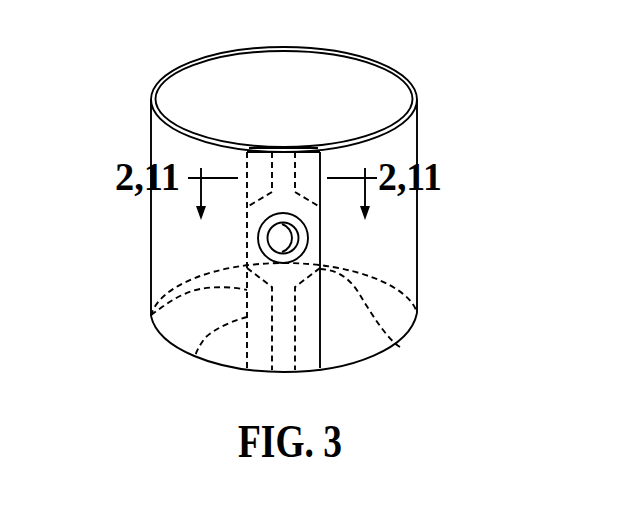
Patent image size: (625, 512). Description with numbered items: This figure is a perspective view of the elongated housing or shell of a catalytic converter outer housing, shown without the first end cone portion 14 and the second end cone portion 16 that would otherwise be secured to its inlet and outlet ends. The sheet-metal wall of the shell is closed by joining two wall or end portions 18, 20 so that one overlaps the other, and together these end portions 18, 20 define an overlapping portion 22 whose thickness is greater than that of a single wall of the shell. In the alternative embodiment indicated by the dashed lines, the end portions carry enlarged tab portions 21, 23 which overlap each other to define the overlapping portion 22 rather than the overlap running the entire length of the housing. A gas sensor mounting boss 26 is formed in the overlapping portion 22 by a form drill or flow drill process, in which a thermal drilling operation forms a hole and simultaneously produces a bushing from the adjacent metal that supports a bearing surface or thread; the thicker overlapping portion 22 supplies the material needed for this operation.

The first end cone portion 14 is at (110, 74).
The second end cone portion 16 is at (168, 214).
The end portion 18 is at (320, 337).
The end portion 20 is at (151, 315).
The enlarged tab portion 21 is at (195, 357).
The overlapping portion 22 is at (274, 145).
The enlarged tab portion 23 is at (400, 347).
The gas sensor mounting boss 26 is at (316, 240).